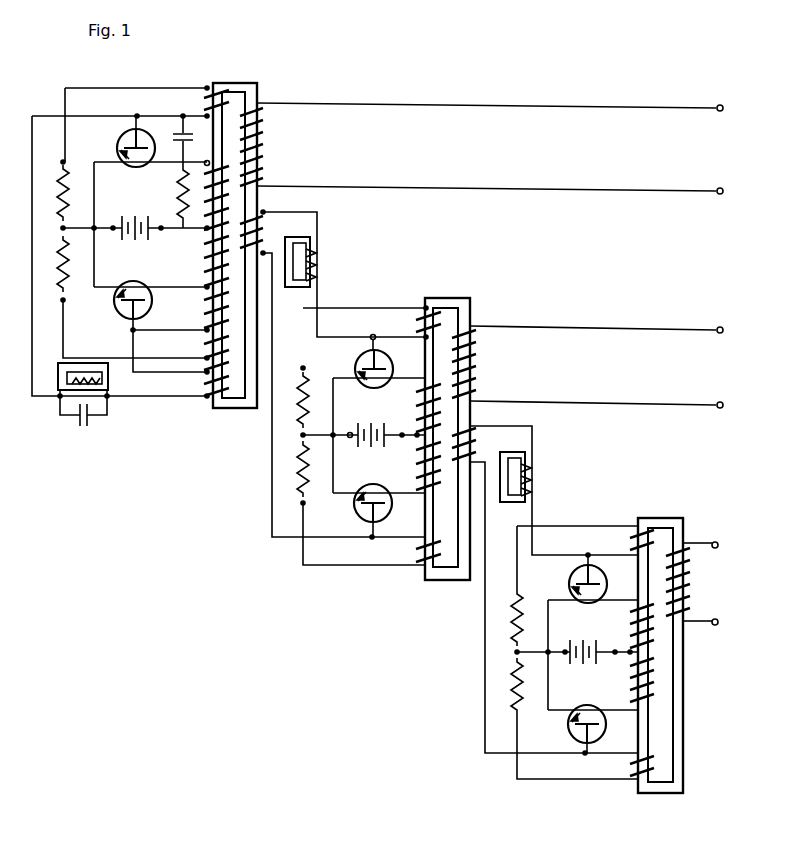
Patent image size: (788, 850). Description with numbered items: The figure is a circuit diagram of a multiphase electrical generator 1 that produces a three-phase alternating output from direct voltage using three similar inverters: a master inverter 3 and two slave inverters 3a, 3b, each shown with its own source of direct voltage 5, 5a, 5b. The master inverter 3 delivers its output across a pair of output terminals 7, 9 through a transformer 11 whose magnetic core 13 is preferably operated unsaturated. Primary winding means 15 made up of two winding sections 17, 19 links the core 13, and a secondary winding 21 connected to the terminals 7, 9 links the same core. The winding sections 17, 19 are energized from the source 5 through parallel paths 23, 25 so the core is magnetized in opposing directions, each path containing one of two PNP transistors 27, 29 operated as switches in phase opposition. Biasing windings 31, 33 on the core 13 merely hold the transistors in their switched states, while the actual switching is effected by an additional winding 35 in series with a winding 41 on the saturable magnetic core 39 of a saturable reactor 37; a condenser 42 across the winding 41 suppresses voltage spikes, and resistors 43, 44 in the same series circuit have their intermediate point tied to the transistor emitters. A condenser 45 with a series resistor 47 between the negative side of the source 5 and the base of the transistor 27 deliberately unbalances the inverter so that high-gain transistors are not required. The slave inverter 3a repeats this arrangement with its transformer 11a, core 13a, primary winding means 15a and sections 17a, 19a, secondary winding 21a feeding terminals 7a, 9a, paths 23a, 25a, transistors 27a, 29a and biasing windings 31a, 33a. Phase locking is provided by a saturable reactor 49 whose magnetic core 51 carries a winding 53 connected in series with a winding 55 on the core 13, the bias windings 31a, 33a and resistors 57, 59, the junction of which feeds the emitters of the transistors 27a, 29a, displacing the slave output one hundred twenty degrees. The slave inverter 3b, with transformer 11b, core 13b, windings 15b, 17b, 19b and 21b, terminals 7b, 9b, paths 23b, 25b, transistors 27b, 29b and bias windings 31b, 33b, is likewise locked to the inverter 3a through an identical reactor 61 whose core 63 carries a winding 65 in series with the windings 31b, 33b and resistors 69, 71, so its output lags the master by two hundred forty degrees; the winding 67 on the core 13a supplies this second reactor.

The multiphase electrical generator 1 is at (172, 494).
The master inverter 3 is at (16, 237).
The slave inverter 3a is at (238, 442).
The slave inverter 3b is at (454, 609).
The source of direct voltage 5 is at (125, 224).
The source of direct voltage 5a is at (382, 430).
The source of direct voltage 5b is at (592, 640).
The output terminal 7 is at (724, 106).
The output terminal 7a is at (723, 332).
The output terminal 7b is at (718, 547).
The output terminal 9 is at (724, 193).
The output terminal 9a is at (723, 407).
The output terminal 9b is at (718, 623).
The transformer 11 is at (278, 94).
The transformer 11a is at (512, 310).
The transformer 11b is at (719, 526).
The magnetic core 13 is at (224, 84).
The magnetic core 13a is at (439, 299).
The magnetic core 13b is at (676, 510).
The primary winding means 15 is at (228, 213).
The primary winding means 15a is at (420, 405).
The primary winding means 15b is at (666, 631).
The winding section 17 is at (214, 166).
The winding section 17a is at (422, 388).
The winding section 17b is at (636, 594).
The winding section 19 is at (227, 286).
The winding section 19a is at (424, 480).
The winding section 19b is at (632, 694).
The secondary winding 21 is at (263, 147).
The secondary winding 21a is at (480, 352).
The secondary winding 21b is at (693, 577).
The parallel path 23 is at (121, 190).
The parallel path 23a is at (373, 410).
The parallel path 23b is at (584, 629).
The parallel path 25 is at (121, 277).
The parallel path 25a is at (373, 477).
The parallel path 25b is at (580, 701).
The transistor 27 is at (126, 139).
The transistor 27a is at (355, 360).
The transistor 27b is at (569, 579).
The transistor 29 is at (120, 307).
The transistor 29a is at (354, 517).
The transistor 29b is at (567, 735).
The biasing winding 31 is at (206, 107).
The biasing winding 31a is at (422, 334).
The biasing winding 31b is at (632, 546).
The biasing winding 33 is at (199, 354).
The biasing winding 33a is at (420, 562).
The biasing winding 33b is at (626, 781).
The additional winding 35 is at (199, 394).
The saturable reactor 37 is at (53, 371).
The saturable magnetic core 39 is at (108, 378).
The winding 41 is at (78, 372).
The condenser 42 is at (88, 414).
The resistor 43 is at (63, 172).
The resistor 44 is at (58, 267).
The condenser 45 is at (181, 136).
The resistor 47 is at (178, 191).
The saturable reactor 49 is at (346, 259).
The magnetic core 51 is at (297, 287).
The winding 53 is at (317, 266).
The winding 55 is at (271, 215).
The resistor 57 is at (298, 386).
The resistor 59 is at (296, 482).
The reactor 61 is at (561, 471).
The magnetic core 63 is at (520, 502).
The winding 65 is at (525, 482).
The winding 67 is at (480, 433).
The resistor 69 is at (505, 596).
The resistor 71 is at (510, 694).